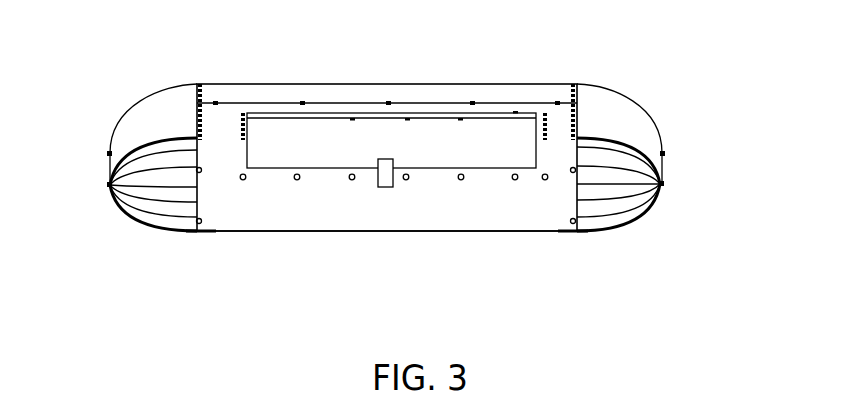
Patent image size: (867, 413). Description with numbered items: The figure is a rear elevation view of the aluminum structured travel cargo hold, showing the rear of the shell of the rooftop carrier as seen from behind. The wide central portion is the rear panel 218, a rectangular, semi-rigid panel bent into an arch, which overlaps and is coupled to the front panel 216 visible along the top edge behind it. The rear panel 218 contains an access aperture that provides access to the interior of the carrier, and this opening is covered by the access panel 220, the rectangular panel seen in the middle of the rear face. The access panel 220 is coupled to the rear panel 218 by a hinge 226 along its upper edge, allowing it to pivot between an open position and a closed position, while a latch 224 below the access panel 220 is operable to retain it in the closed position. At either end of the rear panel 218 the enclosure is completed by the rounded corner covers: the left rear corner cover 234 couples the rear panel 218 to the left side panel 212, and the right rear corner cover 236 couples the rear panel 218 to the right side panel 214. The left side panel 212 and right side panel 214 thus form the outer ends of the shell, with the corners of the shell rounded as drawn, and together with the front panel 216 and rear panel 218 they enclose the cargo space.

The left side panel 212 is at (143, 125).
The right side panel 214 is at (627, 120).
The front panel 216 is at (492, 93).
The rear panel 218 is at (283, 218).
The access panel 220 is at (323, 138).
The latch 224 is at (388, 188).
The hinge 226 is at (383, 117).
The left rear corner cover 234 is at (178, 218).
The right rear corner cover 236 is at (603, 205).